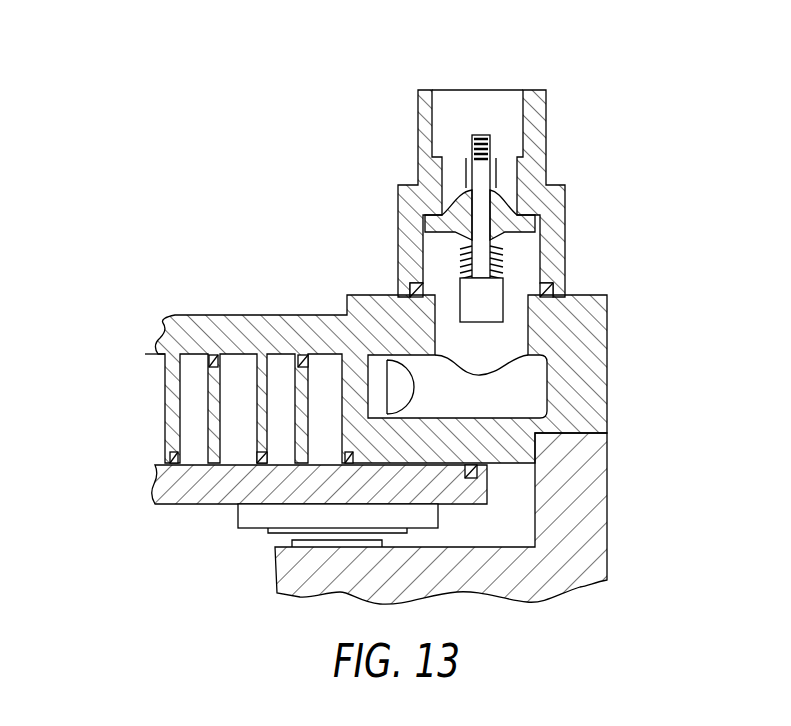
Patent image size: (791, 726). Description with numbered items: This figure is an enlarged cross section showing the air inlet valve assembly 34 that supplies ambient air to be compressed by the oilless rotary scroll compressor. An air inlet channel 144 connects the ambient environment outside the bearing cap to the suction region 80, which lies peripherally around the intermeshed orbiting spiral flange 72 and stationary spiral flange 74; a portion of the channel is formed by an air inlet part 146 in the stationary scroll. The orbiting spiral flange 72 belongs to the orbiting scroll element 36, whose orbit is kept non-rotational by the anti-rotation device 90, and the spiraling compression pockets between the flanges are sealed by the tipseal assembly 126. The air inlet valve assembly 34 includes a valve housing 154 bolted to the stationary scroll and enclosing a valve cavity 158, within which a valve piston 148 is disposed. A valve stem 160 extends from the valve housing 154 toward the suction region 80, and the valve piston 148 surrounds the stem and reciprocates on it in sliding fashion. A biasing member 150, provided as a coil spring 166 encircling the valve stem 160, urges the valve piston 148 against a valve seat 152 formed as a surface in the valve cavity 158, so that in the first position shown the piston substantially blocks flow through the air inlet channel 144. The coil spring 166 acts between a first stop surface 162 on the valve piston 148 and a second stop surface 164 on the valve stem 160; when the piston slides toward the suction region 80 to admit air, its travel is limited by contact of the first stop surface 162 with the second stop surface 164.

The air inlet valve assembly 34 is at (545, 217).
The orbiting scroll element 36 is at (510, 504).
The orbiting spiral flange 72 is at (294, 392).
The stationary spiral flange 74 is at (257, 389).
The suction region 80 is at (328, 377).
The anti-rotation device 90 is at (250, 545).
The tipseal assembly 126 is at (160, 448).
The air inlet channel 144 is at (532, 398).
The air inlet part 146 is at (513, 348).
The valve piston 148 is at (537, 218).
The biasing member 150 is at (520, 249).
The valve seat 152 is at (423, 218).
The valve housing 154 is at (565, 193).
The valve cavity 158 is at (438, 268).
The valve stem 160 is at (478, 178).
The first stop surface 162 is at (462, 246).
The second stop surface 164 is at (505, 266).
The coil spring 166 is at (547, 276).